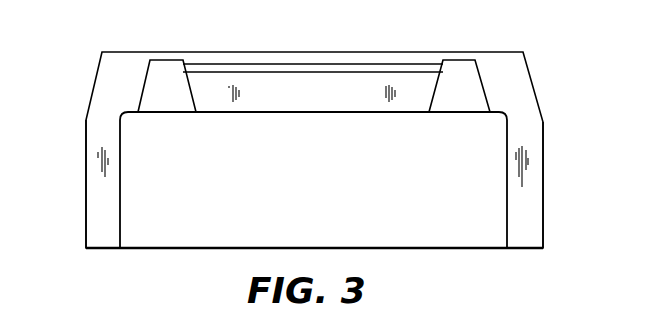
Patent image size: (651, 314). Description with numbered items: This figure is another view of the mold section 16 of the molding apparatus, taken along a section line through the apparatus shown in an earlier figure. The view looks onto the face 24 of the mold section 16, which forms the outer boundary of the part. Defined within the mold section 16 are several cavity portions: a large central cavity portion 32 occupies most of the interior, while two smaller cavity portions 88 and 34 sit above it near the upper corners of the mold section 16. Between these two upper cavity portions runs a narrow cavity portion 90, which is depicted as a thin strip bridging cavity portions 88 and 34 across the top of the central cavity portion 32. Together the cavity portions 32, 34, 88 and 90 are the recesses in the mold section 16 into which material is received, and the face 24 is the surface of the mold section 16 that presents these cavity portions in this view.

The cavity portion 90 is at (313, 68).
The cavity portion 88 is at (183, 101).
The cavity portion 34 is at (474, 100).
The cavity portion 32 is at (327, 197).
The face 24 is at (97, 198).
The mold section 16 is at (535, 168).